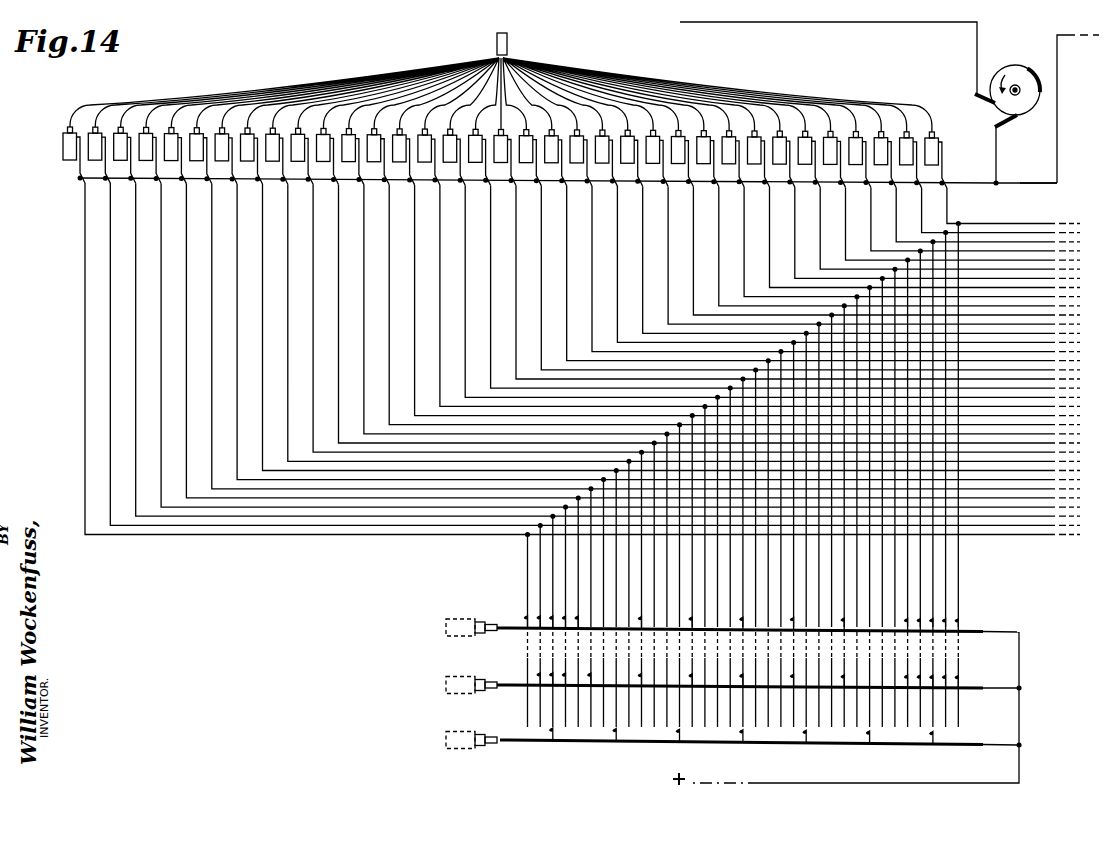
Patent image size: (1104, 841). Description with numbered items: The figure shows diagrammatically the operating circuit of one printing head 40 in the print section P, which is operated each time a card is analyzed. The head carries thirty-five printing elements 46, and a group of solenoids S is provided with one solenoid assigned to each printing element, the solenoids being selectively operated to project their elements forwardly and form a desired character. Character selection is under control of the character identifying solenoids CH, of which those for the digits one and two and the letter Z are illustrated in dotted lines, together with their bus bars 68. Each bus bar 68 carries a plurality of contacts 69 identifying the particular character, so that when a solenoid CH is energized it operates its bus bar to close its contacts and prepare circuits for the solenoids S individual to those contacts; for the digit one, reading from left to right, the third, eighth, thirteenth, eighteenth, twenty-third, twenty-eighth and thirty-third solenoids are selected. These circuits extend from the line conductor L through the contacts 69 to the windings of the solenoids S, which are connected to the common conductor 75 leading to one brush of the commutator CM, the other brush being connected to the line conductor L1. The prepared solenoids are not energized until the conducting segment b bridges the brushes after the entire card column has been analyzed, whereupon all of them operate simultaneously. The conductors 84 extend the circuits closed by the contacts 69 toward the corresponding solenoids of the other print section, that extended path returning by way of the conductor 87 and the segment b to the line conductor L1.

The printing head 40 is at (508, 46).
The printing elements 46 is at (703, 100).
The bus bars 68 is at (508, 736).
The contacts 69 is at (963, 614).
The common conductor 75 is at (1041, 183).
The conductors 84 is at (1027, 230).
The conductor 87 is at (1058, 137).
The solenoids S is at (62, 152).
The print section P is at (404, 60).
The line conductor L1 is at (835, 22).
The commutator CM is at (999, 66).
The conducting segment b is at (1036, 67).
The character identifying solenoids CH is at (446, 738).
The line conductor L is at (843, 763).